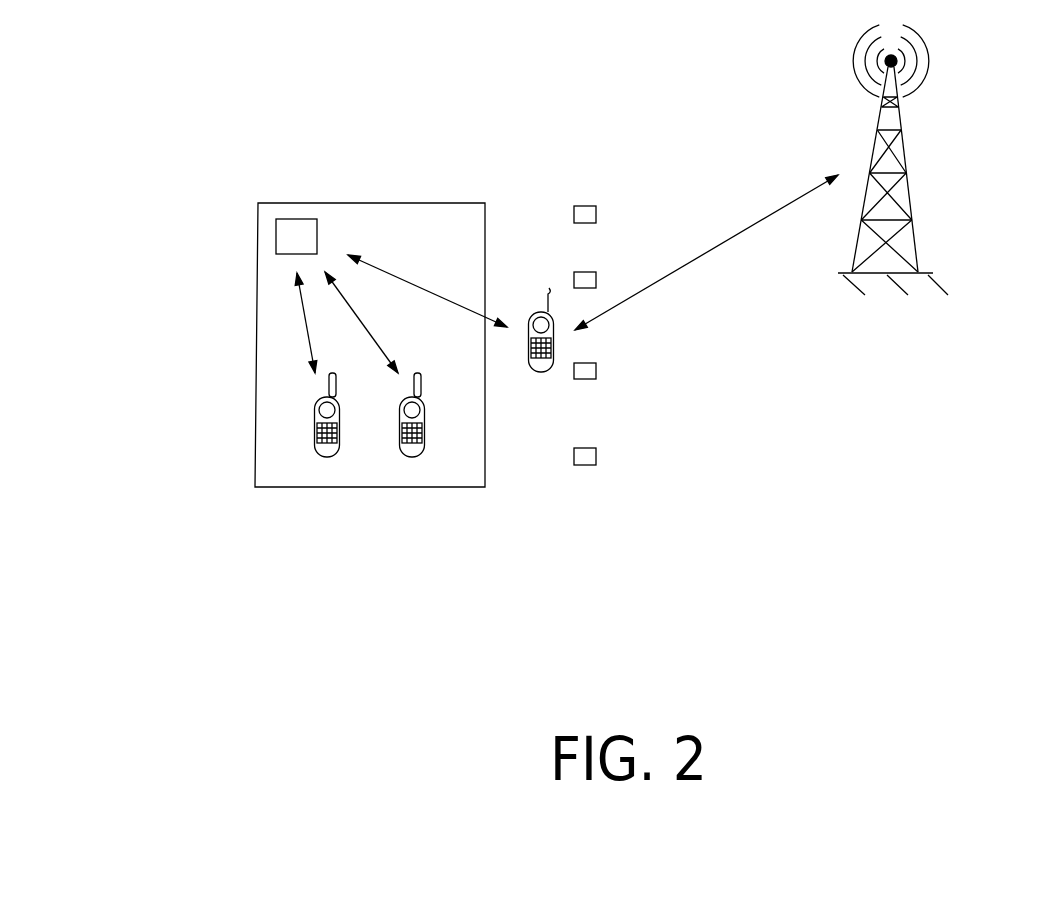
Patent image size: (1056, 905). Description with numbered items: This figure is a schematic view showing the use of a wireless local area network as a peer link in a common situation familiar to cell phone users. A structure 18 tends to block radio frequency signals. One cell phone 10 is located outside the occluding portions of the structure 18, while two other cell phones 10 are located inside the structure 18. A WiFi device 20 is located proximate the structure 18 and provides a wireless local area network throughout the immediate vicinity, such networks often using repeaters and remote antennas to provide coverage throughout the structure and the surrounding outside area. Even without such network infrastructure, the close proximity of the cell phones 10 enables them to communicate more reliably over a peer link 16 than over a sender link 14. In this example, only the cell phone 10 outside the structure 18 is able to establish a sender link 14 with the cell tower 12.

The cell phone 10 is at (542, 371).
The cell tower 12 is at (940, 160).
The sender link 14 is at (706, 276).
The peer link 16 is at (370, 330).
The structure 18 is at (370, 265).
The WiFi device 20 is at (251, 169).